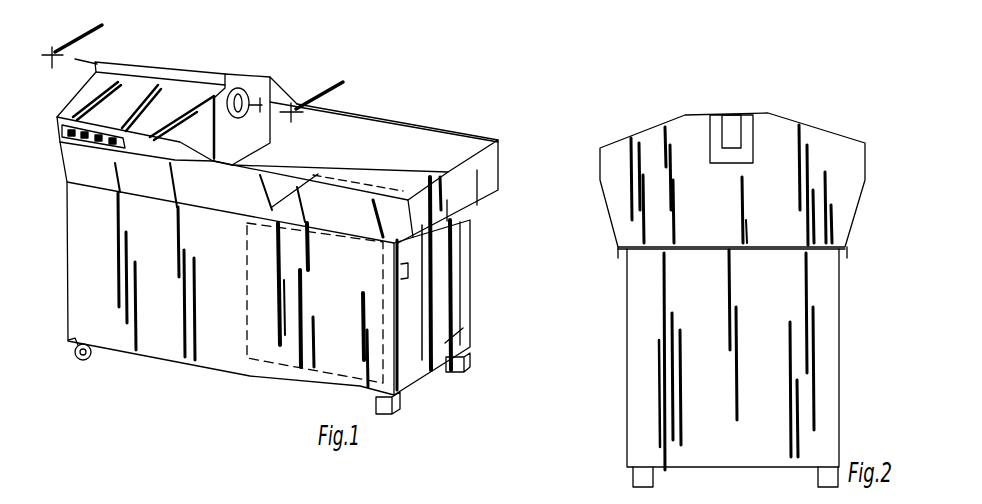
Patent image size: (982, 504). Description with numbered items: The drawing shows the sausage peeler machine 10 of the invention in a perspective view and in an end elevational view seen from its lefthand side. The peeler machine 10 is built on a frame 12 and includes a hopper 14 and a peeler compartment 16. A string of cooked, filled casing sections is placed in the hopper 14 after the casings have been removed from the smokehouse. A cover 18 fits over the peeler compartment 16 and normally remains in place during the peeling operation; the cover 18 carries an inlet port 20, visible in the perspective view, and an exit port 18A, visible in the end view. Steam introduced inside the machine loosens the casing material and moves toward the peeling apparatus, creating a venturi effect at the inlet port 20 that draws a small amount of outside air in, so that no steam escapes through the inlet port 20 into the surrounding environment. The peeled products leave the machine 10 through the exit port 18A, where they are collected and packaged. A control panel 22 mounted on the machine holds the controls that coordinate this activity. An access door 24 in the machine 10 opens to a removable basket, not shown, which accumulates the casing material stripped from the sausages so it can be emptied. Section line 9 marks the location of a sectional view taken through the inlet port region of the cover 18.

In FIG. 1, the section line 9- 9 is at (191, 73).
In FIG. 1, the peeler machine 10 is at (380, 77).
In FIG. 1, the frame 12 is at (213, 357).
In FIG. 1, the hopper 14 is at (357, 151).
In FIG. 1, the peeler compartment 16 is at (155, 48).
In FIG. 2, the peeler compartment 16 is at (650, 128).
In FIG. 1, the cover 18 is at (117, 62).
In FIG. 2, the cover 18 is at (757, 122).
In FIG. 2, the exit port 18A is at (733, 128).
In FIG. 1, the inlet port 20 is at (227, 74).
In FIG. 1, the control panel 22 is at (102, 146).
In FIG. 1, the access door 24 is at (436, 282).